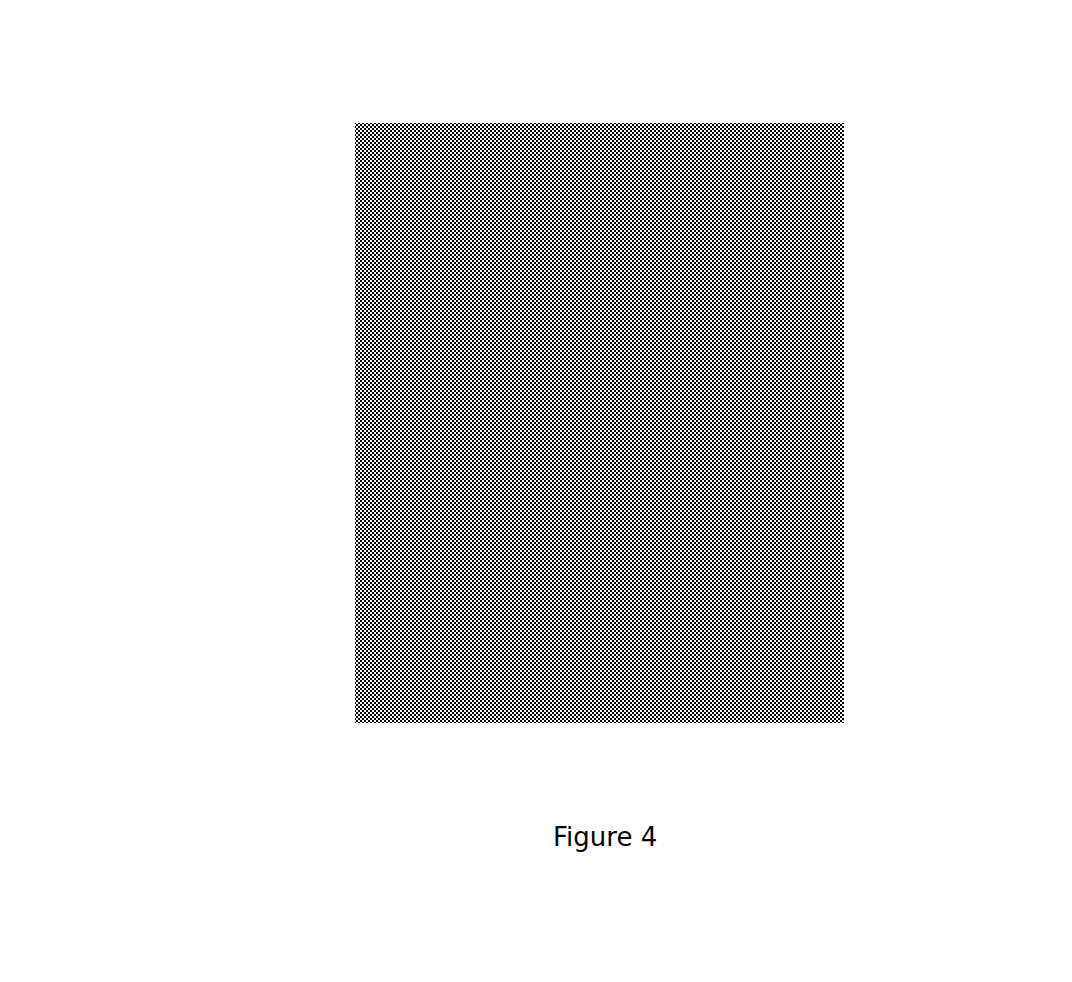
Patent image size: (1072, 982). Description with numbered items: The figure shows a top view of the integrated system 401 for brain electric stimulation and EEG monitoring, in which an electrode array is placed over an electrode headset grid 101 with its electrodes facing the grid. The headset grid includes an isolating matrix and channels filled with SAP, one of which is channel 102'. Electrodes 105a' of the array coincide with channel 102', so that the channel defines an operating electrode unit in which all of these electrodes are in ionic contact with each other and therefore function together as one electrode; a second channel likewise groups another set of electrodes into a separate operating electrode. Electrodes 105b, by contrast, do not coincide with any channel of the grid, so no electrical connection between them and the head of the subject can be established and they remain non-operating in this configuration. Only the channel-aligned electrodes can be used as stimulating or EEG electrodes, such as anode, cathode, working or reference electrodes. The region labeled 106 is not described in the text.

The electrode headset grid 101 is at (348, 143).
The channel 102' is at (317, 253).
The electrodes 105a' is at (735, 228).
The electrodes 105b is at (697, 402).
The image of structure 106 is at (792, 152).
The integrated system 401 is at (508, 58).